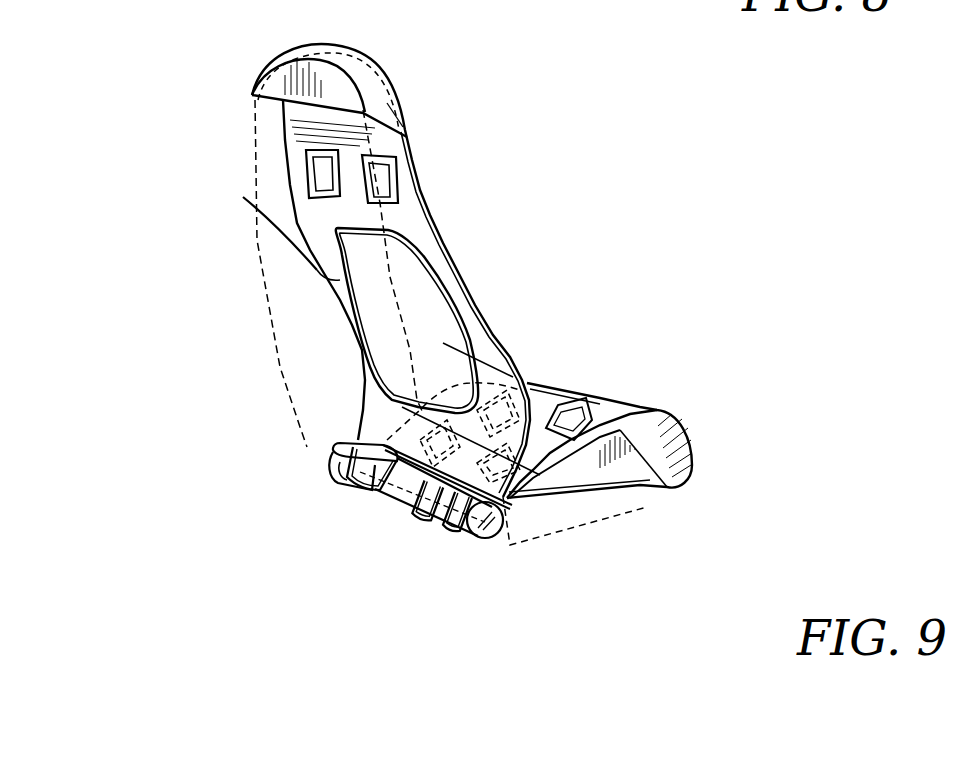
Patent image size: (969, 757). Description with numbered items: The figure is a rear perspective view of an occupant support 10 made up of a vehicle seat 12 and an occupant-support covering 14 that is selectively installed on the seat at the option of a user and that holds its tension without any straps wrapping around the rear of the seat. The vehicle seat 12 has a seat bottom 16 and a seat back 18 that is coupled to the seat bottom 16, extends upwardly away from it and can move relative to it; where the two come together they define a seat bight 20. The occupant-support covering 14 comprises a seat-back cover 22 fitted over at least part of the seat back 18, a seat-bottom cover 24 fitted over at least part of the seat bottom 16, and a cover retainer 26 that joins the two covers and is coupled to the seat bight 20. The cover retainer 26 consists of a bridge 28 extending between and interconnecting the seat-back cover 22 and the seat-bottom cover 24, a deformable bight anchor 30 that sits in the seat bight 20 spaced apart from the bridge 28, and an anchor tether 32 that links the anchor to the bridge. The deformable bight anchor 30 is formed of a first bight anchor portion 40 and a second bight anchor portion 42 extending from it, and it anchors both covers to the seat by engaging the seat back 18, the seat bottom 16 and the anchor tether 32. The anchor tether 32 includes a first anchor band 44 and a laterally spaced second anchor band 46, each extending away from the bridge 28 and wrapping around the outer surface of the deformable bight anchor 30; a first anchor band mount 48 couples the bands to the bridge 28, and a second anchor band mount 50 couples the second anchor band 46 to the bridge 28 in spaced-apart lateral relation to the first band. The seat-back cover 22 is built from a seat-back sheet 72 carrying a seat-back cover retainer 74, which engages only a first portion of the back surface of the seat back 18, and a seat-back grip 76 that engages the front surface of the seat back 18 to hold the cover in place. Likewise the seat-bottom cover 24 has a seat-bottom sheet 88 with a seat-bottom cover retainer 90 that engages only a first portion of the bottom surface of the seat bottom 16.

The occupant support 10 is at (137, 66).
The vehicle seat 12 is at (548, 605).
The occupant-support covering 14 is at (552, 300).
The seat bottom 16 is at (637, 521).
The seat back 18 is at (247, 250).
The seat bight 20 is at (327, 438).
The seat-back cover 22 is at (450, 225).
The seat-bottom cover 24 is at (563, 373).
The cover retainer 26 is at (466, 450).
The bridge 28 is at (650, 410).
The deformable bight anchor 30 is at (469, 623).
The anchor tether 32 is at (445, 576).
The first bight anchor portion 40 is at (340, 450).
The second bight anchor portion 42 is at (497, 530).
The first anchor band 44 is at (351, 479).
The second anchor band 46 is at (407, 483).
The first anchor band mount 48 is at (350, 452).
The second anchor band mount 50 is at (470, 490).
The seat-back sheet 72 is at (413, 217).
The seat-back cover retainer 74 is at (340, 113).
The seat-back grip 76 is at (370, 178).
The seat-bottom sheet 88 is at (563, 410).
The seat-bottom cover retainer 90 is at (657, 493).